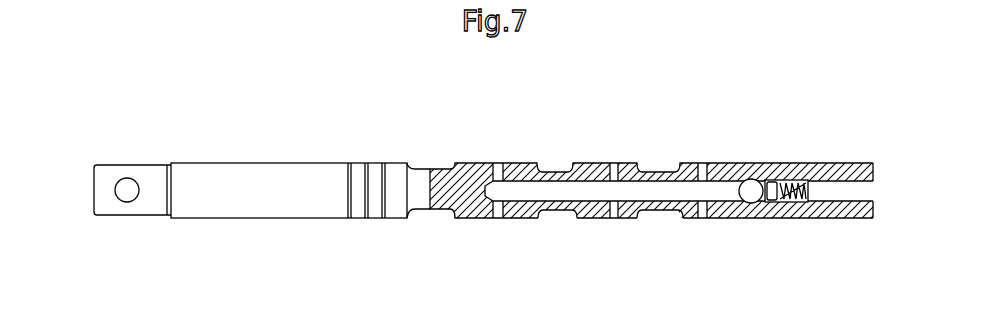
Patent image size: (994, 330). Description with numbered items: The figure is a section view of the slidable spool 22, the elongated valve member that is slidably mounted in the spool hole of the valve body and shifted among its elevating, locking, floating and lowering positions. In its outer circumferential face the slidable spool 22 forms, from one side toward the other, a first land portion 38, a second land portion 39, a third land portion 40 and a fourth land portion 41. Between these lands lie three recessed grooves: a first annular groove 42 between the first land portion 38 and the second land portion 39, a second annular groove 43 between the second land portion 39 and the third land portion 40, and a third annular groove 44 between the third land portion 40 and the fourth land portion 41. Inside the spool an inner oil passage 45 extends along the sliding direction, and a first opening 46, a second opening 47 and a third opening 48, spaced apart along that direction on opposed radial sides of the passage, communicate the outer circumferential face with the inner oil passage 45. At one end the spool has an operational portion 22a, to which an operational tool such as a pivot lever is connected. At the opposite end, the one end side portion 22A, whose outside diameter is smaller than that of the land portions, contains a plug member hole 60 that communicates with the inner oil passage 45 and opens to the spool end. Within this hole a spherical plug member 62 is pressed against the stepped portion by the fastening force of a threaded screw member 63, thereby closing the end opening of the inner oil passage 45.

The operational portion 22a is at (145, 178).
The slidable spool 22 is at (263, 177).
The one end side portion 22A is at (834, 229).
The first land portion 38 is at (393, 177).
The second land portion 39 is at (475, 168).
The third land portion 40 is at (592, 168).
The fourth land portion 41 is at (716, 167).
The first annular groove 42 is at (441, 211).
The second annular groove 43 is at (555, 210).
The third annular groove 44 is at (657, 210).
The inner oil passage 45 is at (663, 190).
The first opening 46 is at (500, 163).
The second opening 47 is at (617, 163).
The third opening 48 is at (702, 163).
The plug member hole 60 is at (846, 184).
The plug member 62 is at (752, 196).
The screw member 63 is at (798, 184).